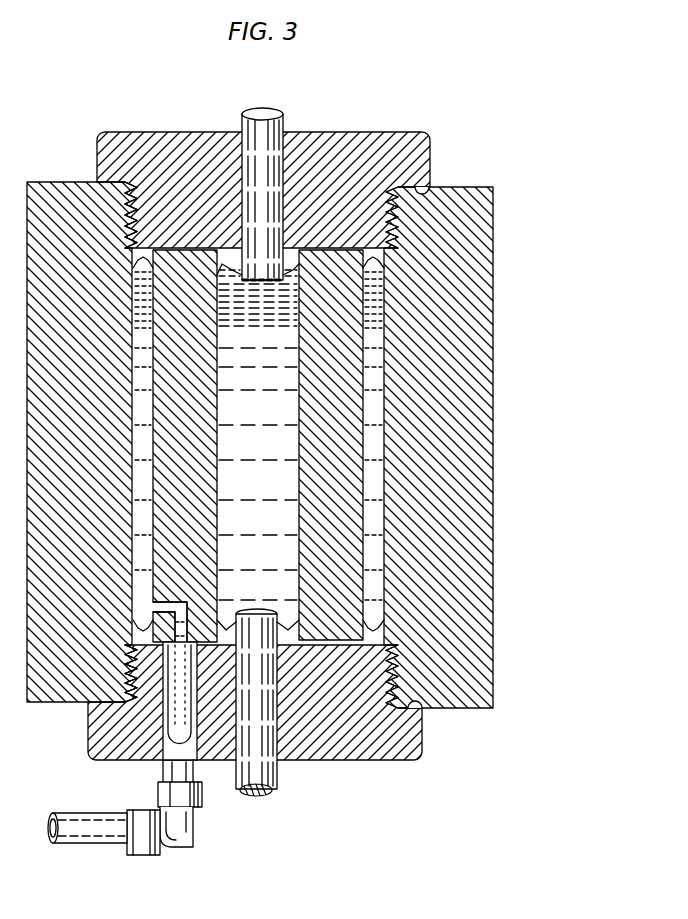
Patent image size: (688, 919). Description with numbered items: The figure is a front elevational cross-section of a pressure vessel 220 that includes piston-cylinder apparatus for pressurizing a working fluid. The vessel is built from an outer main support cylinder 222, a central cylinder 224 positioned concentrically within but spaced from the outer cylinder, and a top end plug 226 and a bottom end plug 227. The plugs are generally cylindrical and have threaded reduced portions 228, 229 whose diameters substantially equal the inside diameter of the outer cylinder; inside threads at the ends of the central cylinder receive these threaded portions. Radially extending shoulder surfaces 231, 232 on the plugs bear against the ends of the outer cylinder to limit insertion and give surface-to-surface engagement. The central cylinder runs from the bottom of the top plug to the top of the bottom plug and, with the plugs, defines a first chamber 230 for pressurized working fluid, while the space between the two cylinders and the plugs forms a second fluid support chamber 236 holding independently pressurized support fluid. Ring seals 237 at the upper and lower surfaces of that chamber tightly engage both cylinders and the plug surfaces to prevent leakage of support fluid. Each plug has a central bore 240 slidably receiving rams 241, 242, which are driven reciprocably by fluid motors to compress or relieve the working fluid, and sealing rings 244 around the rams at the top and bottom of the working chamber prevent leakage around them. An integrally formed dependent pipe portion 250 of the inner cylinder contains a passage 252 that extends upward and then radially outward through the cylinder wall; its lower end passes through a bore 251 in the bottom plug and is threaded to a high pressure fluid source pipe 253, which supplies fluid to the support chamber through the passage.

The pressure vessel 220 is at (497, 166).
The outer main support cylinder 222 is at (490, 358).
The central cylinder 224 is at (320, 512).
The top end plug 226 is at (386, 133).
The bottom end plug 227 is at (396, 763).
The threaded reduced portion 228 is at (145, 220).
The threaded reduced portion 229 is at (125, 686).
The first chamber 230 is at (278, 480).
The shoulder surface 231 is at (423, 195).
The shoulder surface 232 is at (416, 706).
The second fluid chamber 236 is at (385, 535).
The ring seals 237 is at (385, 263).
The bore 240 is at (267, 452).
The ram 241 is at (283, 116).
The ram 242 is at (278, 786).
The sealing rings 244 is at (221, 268).
The pipe portion 250 is at (196, 770).
The bore 251 is at (158, 762).
The passage 252 is at (182, 603).
The high pressure fluid source pipe 253 is at (75, 845).